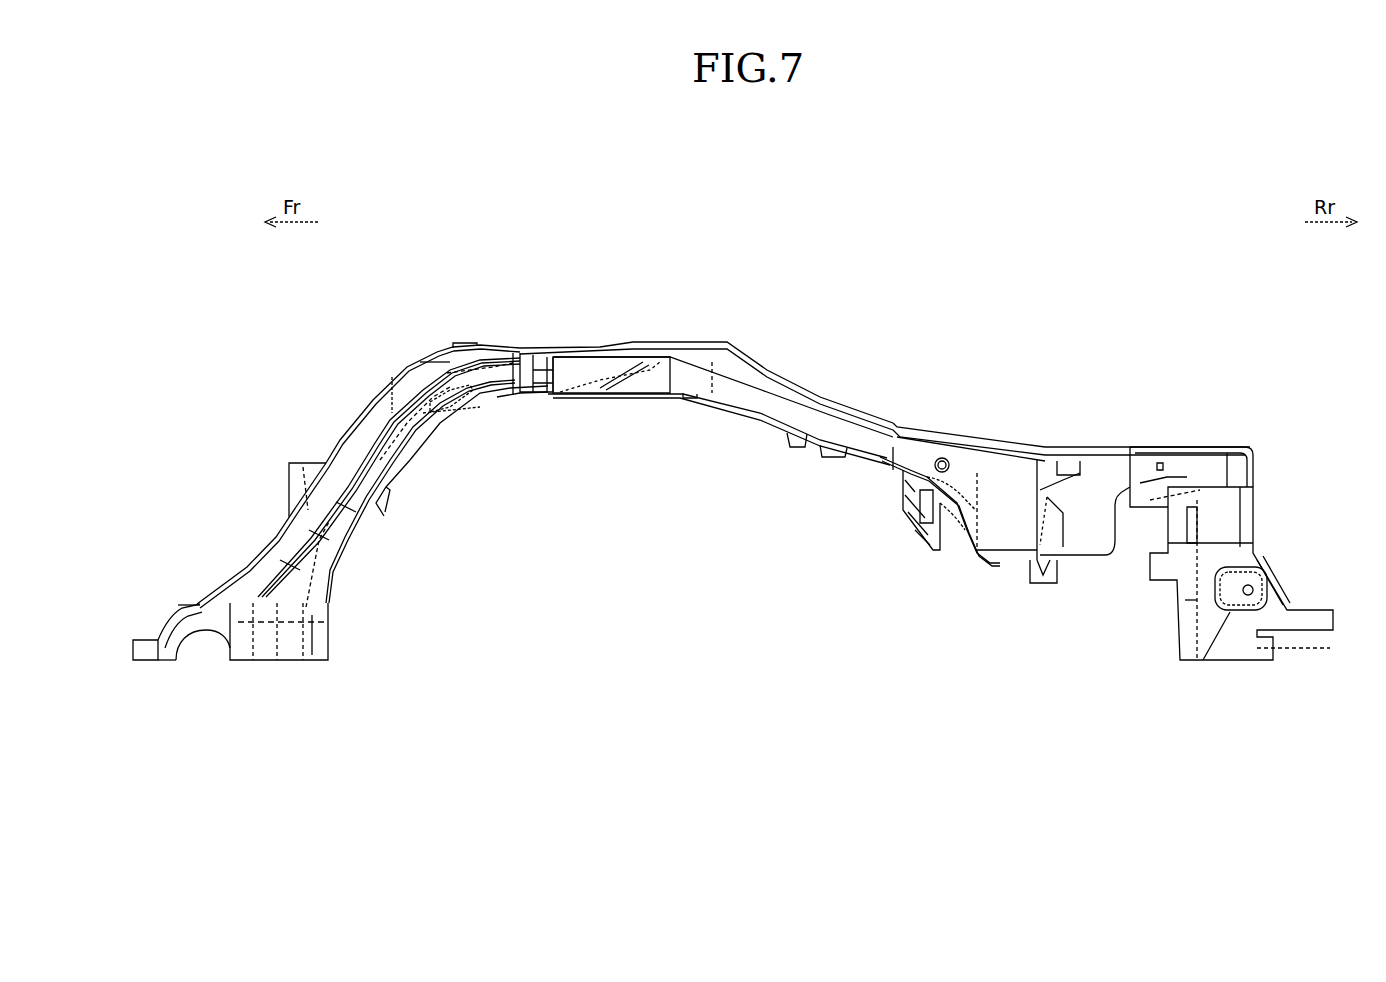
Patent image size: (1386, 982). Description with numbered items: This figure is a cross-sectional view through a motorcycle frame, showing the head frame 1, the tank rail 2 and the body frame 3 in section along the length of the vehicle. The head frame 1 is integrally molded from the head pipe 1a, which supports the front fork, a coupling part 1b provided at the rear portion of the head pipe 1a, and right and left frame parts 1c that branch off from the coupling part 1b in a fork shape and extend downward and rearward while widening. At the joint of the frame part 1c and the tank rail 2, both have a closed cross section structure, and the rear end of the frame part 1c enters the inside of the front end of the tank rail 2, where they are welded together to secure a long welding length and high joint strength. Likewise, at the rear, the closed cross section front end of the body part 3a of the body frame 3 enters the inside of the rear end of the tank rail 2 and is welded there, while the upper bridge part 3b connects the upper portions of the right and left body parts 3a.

The head frame 1 is at (255, 545).
The head pipe 1a is at (206, 604).
The coupling part 1b is at (276, 663).
The frame parts 1c is at (363, 421).
The tank rails 2 is at (770, 372).
The body frame 3 is at (1077, 447).
The body parts 3a is at (1227, 522).
The upper bridge part 3b is at (1200, 447).